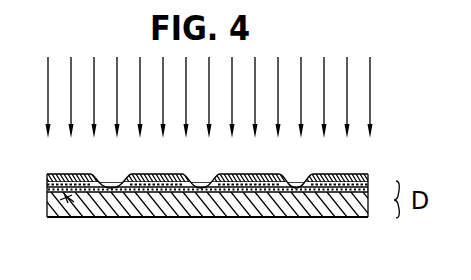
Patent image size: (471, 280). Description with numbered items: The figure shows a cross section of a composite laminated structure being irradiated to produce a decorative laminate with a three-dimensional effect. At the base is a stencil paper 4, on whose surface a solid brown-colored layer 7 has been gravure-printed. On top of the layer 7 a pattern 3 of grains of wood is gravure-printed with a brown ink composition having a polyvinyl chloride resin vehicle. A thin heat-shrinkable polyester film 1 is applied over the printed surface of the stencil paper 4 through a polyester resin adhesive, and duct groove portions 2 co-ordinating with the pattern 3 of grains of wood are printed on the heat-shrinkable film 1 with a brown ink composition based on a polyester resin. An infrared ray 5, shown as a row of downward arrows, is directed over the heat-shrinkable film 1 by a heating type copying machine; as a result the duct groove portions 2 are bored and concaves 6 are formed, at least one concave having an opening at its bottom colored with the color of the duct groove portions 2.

The heat-shrinkable polyester film 1 is at (68, 194).
The duct groove portions 2 is at (205, 196).
The pattern of grains of wood 3 is at (333, 193).
The stencil paper 4 is at (265, 204).
The infrared ray 5 is at (323, 97).
The concaves 6 is at (295, 184).
The solid brown-colored layer 7 is at (119, 193).